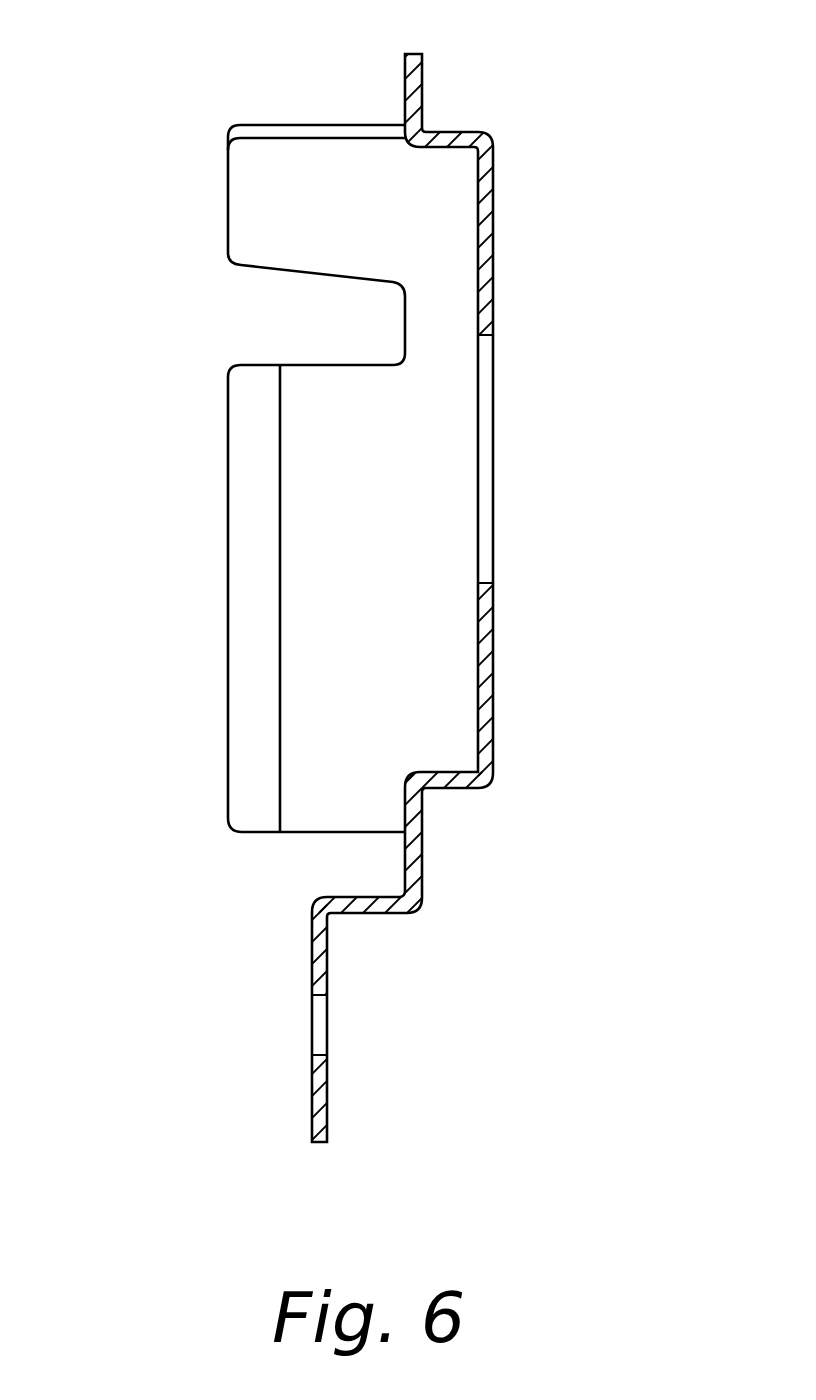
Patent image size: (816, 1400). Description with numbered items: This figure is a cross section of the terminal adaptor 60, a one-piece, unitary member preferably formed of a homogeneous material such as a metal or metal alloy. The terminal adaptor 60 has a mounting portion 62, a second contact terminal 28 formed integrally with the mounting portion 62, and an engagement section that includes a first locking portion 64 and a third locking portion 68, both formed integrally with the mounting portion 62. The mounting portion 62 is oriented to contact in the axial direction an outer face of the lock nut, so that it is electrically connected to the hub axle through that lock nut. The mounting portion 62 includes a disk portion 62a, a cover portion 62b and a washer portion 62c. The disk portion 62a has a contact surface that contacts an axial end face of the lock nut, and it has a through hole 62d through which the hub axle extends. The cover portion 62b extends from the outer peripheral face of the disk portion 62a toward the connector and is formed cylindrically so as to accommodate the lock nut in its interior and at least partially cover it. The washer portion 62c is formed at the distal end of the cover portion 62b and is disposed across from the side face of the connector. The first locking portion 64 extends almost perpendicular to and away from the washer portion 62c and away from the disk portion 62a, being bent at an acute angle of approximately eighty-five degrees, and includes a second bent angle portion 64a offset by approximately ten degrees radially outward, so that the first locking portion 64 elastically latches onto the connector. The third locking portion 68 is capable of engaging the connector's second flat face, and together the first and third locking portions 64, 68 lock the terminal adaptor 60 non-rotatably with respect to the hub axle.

The terminal adaptor 60 is at (517, 188).
The mounting portion 62 is at (499, 737).
The disk portion 62a is at (493, 652).
The cover portion 62b is at (455, 789).
The washer portion 62c is at (423, 92).
The through hole 62d is at (493, 562).
The first locking portion 64 is at (226, 598).
The angle portion 64a is at (280, 556).
The third locking portion 68 is at (250, 204).
The second contact terminal 28 is at (329, 1121).